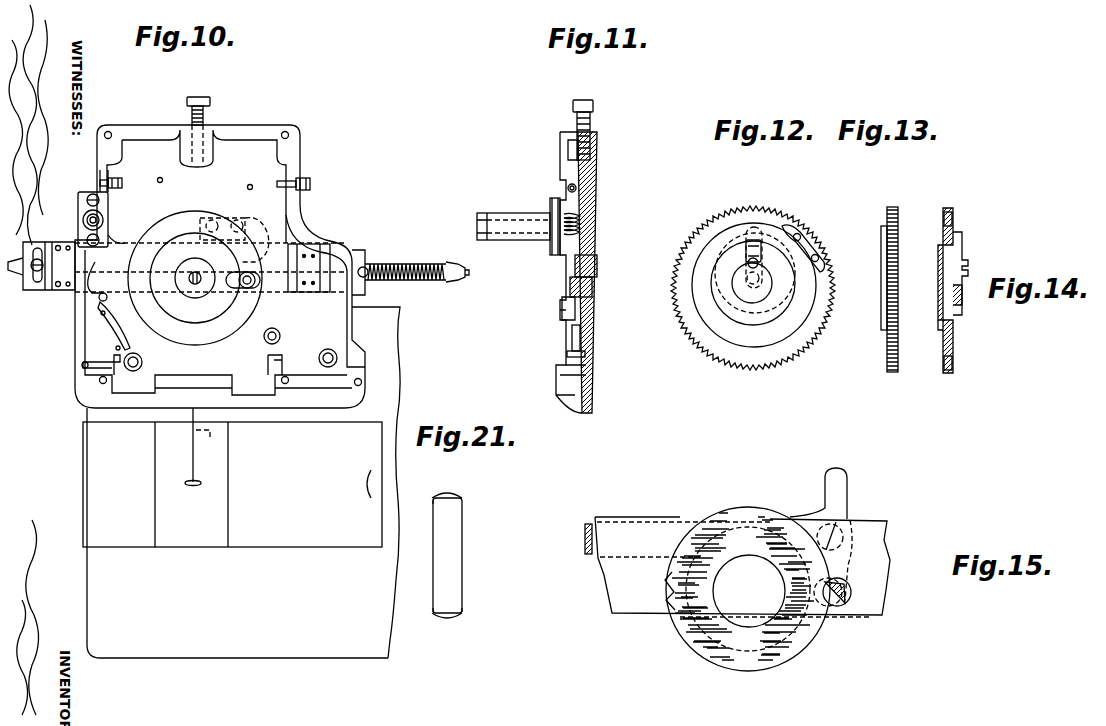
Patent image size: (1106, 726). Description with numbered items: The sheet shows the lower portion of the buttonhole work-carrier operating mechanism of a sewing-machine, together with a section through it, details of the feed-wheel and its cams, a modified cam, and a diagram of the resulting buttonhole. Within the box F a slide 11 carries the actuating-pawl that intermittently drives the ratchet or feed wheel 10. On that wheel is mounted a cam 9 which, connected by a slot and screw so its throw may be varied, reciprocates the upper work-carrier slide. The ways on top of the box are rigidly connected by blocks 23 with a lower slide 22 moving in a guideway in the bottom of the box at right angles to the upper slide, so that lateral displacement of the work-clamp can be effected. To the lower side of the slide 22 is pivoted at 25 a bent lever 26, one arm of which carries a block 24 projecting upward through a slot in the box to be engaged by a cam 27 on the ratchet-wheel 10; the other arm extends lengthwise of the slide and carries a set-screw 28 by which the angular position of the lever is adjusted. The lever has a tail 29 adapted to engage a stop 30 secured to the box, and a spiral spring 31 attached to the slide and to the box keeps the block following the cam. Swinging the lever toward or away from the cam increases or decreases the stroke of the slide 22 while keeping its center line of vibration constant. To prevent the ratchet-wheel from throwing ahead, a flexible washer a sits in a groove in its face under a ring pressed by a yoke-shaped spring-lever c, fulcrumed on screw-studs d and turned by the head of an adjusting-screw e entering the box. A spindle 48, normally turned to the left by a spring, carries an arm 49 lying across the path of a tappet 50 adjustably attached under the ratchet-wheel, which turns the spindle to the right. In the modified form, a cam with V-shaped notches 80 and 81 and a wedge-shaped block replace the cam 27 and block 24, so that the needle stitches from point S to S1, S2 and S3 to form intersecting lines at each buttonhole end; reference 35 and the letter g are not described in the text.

In FIG. 10, the box F is at (220, 255).
In FIG. 11, the box F is at (584, 272).
In FIG. 10, the adjusting-screw e is at (205, 110).
In FIG. 11, the adjusting-screw e is at (594, 117).
In FIG. 10, the slide 11 is at (197, 92).
In FIG. 10, the screw-studs d is at (120, 180).
In FIG. 10, the spindle 48 is at (86, 205).
In FIG. 11, the spindle 48 is at (512, 232).
In FIG. 10, the set-screw 28 is at (41, 277).
In FIG. 10, the blocks 23 is at (62, 242).
In FIG. 10, the arm 49 is at (112, 230).
In FIG. 10, the bent lever 26 is at (127, 242).
In FIG. 11, the bent lever 26 is at (598, 265).
In FIG. 15, the bent lever 26 is at (587, 541).
In FIG. 10, the pivot 25 is at (245, 257).
In FIG. 15, the pivot 25 is at (866, 522).
In FIG. 10, the stop 30 is at (226, 218).
In FIG. 10, the tail 29 is at (255, 230).
In FIG. 15, the tail 29 is at (845, 490).
In FIG. 10, the block 24 is at (255, 288).
In FIG. 10, the lower slide 22 is at (362, 254).
In FIG. 11, the lower slide 22 is at (595, 294).
In FIG. 10, the spiral spring 31 is at (440, 262).
In FIG. 10, the drawer 35 is at (241, 482).
In FIG. 11, the screw g is at (566, 186).
In FIG. 11, the spring-lever c is at (572, 336).
In FIG. 12, the ratchet-wheel 10 is at (767, 360).
In FIG. 13, the ratchet-wheel 10 is at (893, 210).
In FIG. 14, the ratchet-wheel 10 is at (948, 210).
In FIG. 12, the cam 27 is at (776, 308).
In FIG. 14, the cam 27 is at (940, 326).
In FIG. 12, the cam 9 is at (769, 240).
In FIG. 14, the cam 9 is at (964, 246).
In FIG. 12, the tappet 50 is at (818, 244).
In FIG. 14, the washer a is at (955, 216).
In FIG. 15, the notch 81 is at (668, 588).
In FIG. 15, the notch 80 is at (852, 576).
In FIG. 21, the needle point S is at (462, 612).
In FIG. 21, the needle point S1 is at (442, 620).
In FIG. 21, the needle point S2 is at (466, 620).
In FIG. 21, the needle point S3 is at (440, 614).